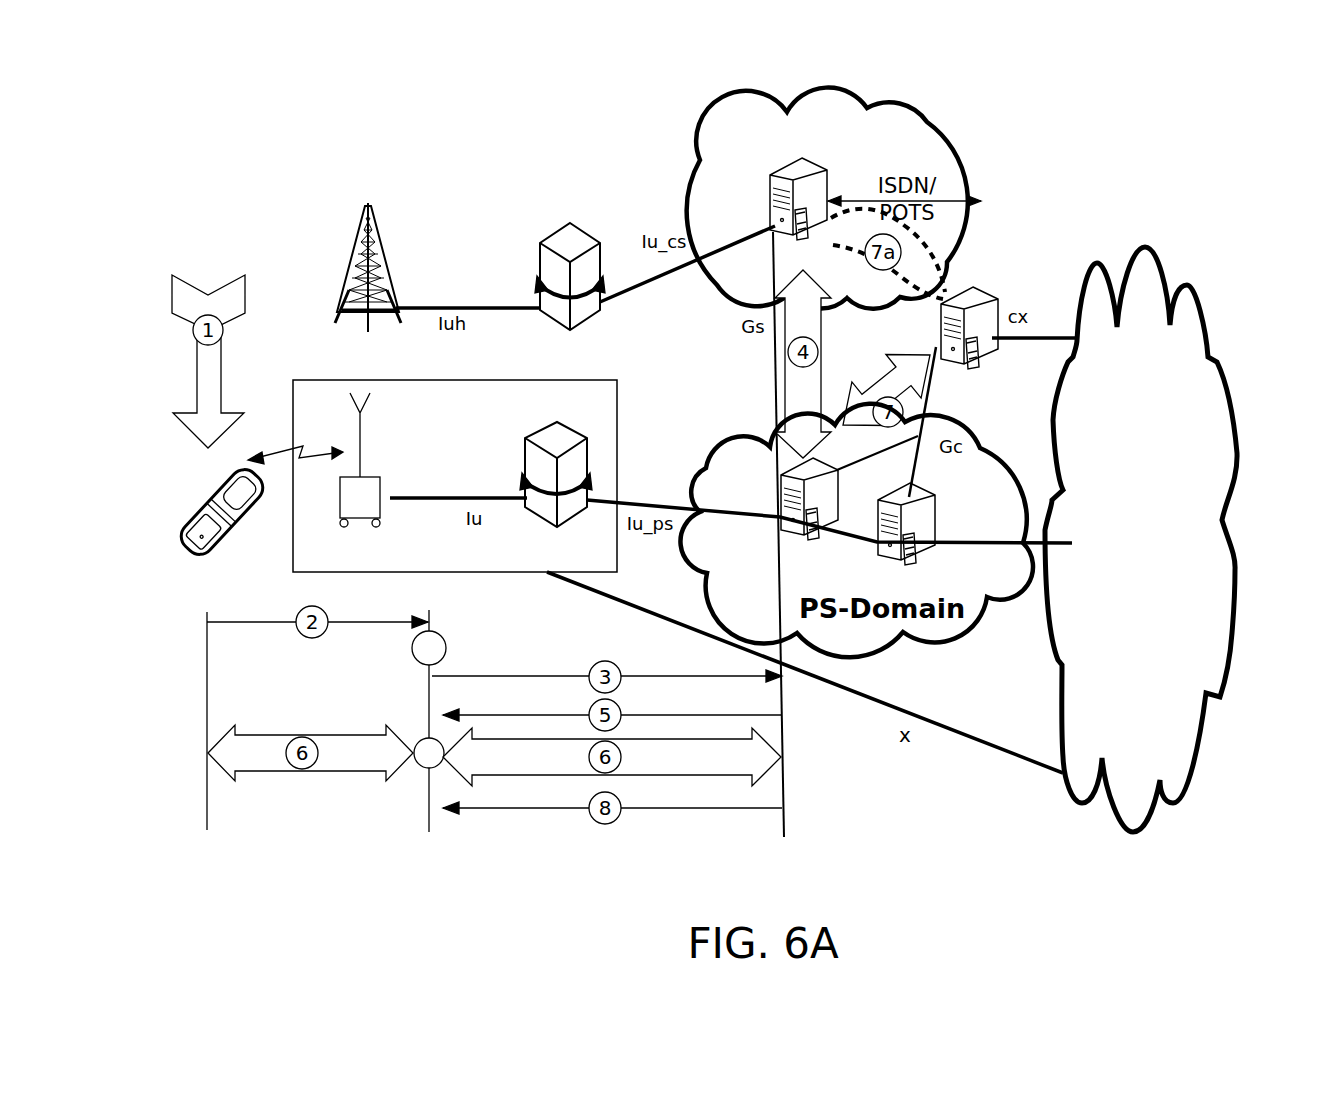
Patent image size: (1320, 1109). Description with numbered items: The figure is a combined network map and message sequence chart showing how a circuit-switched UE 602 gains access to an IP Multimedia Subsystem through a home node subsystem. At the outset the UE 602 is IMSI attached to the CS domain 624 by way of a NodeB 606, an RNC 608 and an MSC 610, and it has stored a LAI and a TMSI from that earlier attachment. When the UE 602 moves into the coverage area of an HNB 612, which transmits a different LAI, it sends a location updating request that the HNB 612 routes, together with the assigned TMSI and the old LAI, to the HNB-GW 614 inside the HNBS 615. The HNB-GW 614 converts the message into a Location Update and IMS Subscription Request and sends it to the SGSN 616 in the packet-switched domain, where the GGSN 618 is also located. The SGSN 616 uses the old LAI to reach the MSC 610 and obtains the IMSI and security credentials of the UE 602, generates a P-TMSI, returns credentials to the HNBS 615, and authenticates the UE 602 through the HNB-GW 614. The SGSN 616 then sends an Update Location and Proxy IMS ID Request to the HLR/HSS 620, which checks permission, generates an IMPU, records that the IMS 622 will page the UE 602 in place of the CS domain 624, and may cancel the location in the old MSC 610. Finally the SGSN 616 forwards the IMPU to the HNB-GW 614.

The UE 602 is at (193, 535).
The NodeB 606 is at (377, 253).
The RNC 608 is at (582, 230).
The MSC 610 is at (830, 183).
The HNB 612 is at (378, 483).
The HNB-GW 614 is at (540, 428).
The HNBS 615 is at (487, 575).
The SGSN 616 is at (780, 500).
The GGSN 618 is at (928, 531).
The HLR/HSS 620 is at (985, 305).
The IMS 622 is at (1202, 302).
The CS domain 624 is at (925, 127).